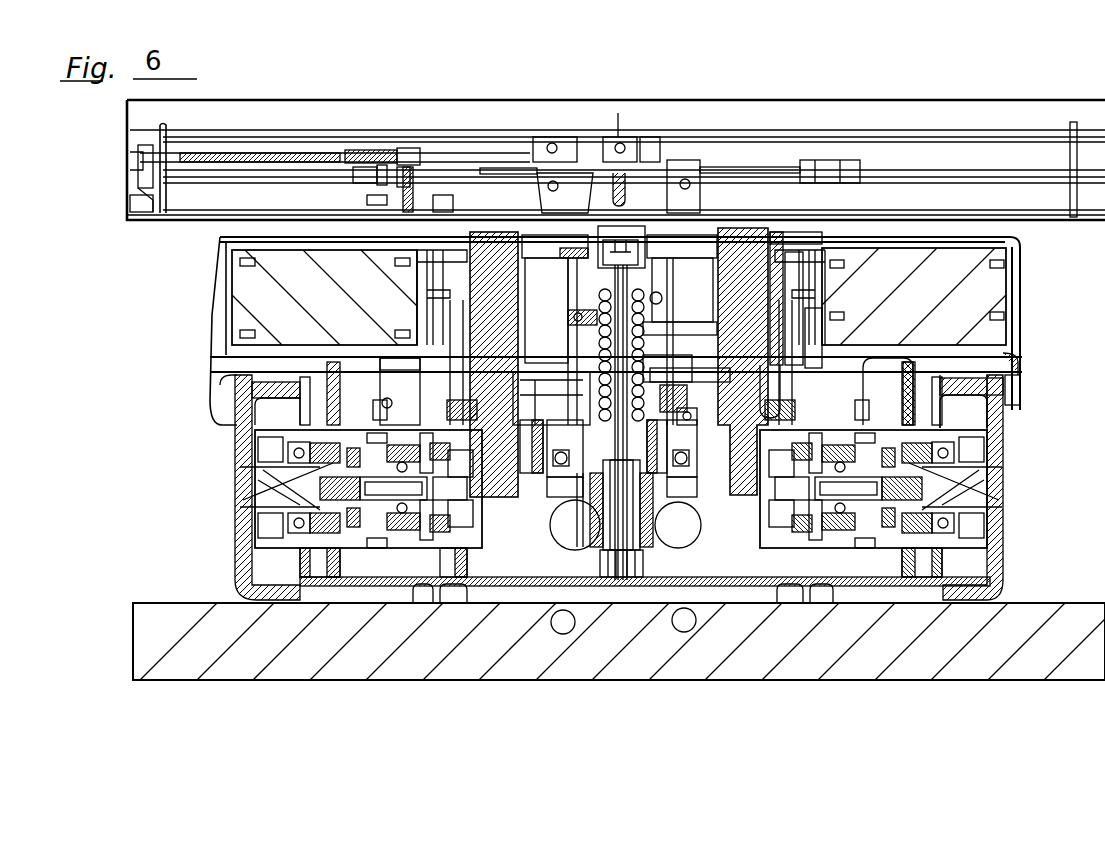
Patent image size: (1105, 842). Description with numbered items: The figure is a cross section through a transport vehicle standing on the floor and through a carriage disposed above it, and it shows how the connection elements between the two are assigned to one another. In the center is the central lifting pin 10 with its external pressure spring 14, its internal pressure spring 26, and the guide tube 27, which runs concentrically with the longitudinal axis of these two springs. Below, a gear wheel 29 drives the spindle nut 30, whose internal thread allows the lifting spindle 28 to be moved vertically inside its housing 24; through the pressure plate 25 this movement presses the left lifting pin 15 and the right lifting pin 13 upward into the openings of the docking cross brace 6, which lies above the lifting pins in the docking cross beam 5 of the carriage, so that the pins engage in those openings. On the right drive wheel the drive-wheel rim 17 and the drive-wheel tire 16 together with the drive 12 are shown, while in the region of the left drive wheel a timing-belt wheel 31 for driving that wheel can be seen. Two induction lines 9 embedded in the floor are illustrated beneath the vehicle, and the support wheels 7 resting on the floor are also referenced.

The docking cross beam 5 is at (1045, 215).
The docking cross brace 6 is at (712, 190).
The support wheels 7 is at (797, 597).
The induction lines 9 is at (563, 626).
The central lifting pin 10 is at (637, 278).
The drive 12 is at (955, 305).
The right lifting pin 13 is at (748, 468).
The external pressure spring 14 is at (597, 323).
The left lifting pin 15 is at (497, 178).
The drive-wheel tire 16 is at (827, 372).
The drive-wheel rim 17 is at (1025, 422).
The housing 24 is at (580, 473).
The pressure plate 25 is at (543, 487).
The internal pressure spring 26 is at (467, 372).
The guide tube 27 is at (622, 470).
The lifting spindle 28 is at (647, 480).
The gear wheel 29 is at (693, 483).
The spindle nut 30 is at (673, 483).
The timing-belt wheel 31 is at (463, 548).